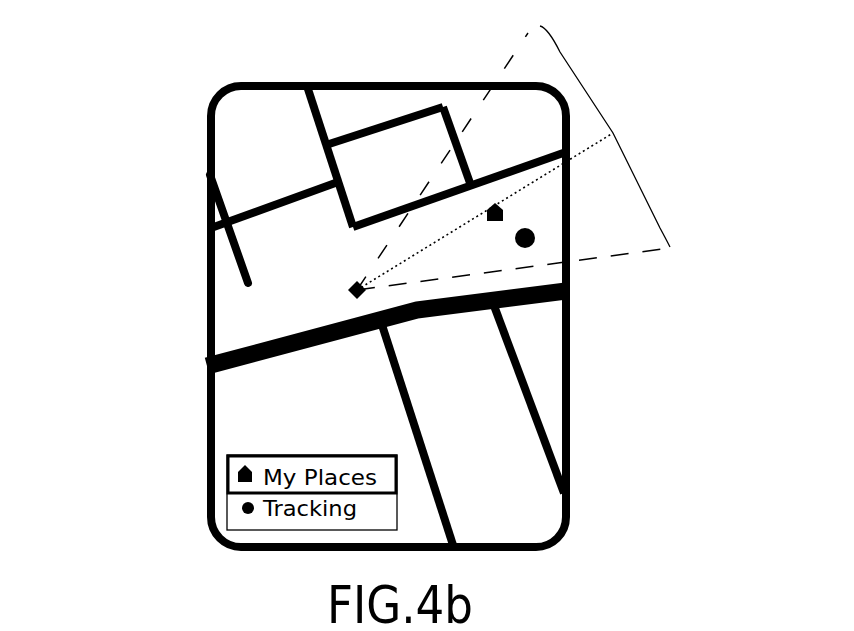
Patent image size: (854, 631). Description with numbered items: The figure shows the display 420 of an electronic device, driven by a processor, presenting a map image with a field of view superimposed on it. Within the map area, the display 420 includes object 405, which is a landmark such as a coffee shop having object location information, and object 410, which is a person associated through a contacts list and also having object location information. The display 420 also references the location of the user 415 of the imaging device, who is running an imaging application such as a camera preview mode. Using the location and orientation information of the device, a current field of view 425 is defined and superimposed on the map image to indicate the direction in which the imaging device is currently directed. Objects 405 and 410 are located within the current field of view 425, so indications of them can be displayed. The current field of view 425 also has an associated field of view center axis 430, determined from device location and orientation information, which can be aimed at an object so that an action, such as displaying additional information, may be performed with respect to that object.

The object 405 is at (519, 213).
The object 410 is at (551, 237).
The user 415 is at (331, 290).
The display 420 is at (344, 82).
The current field of view 425 is at (631, 132).
The field of view center axis 430 is at (437, 228).